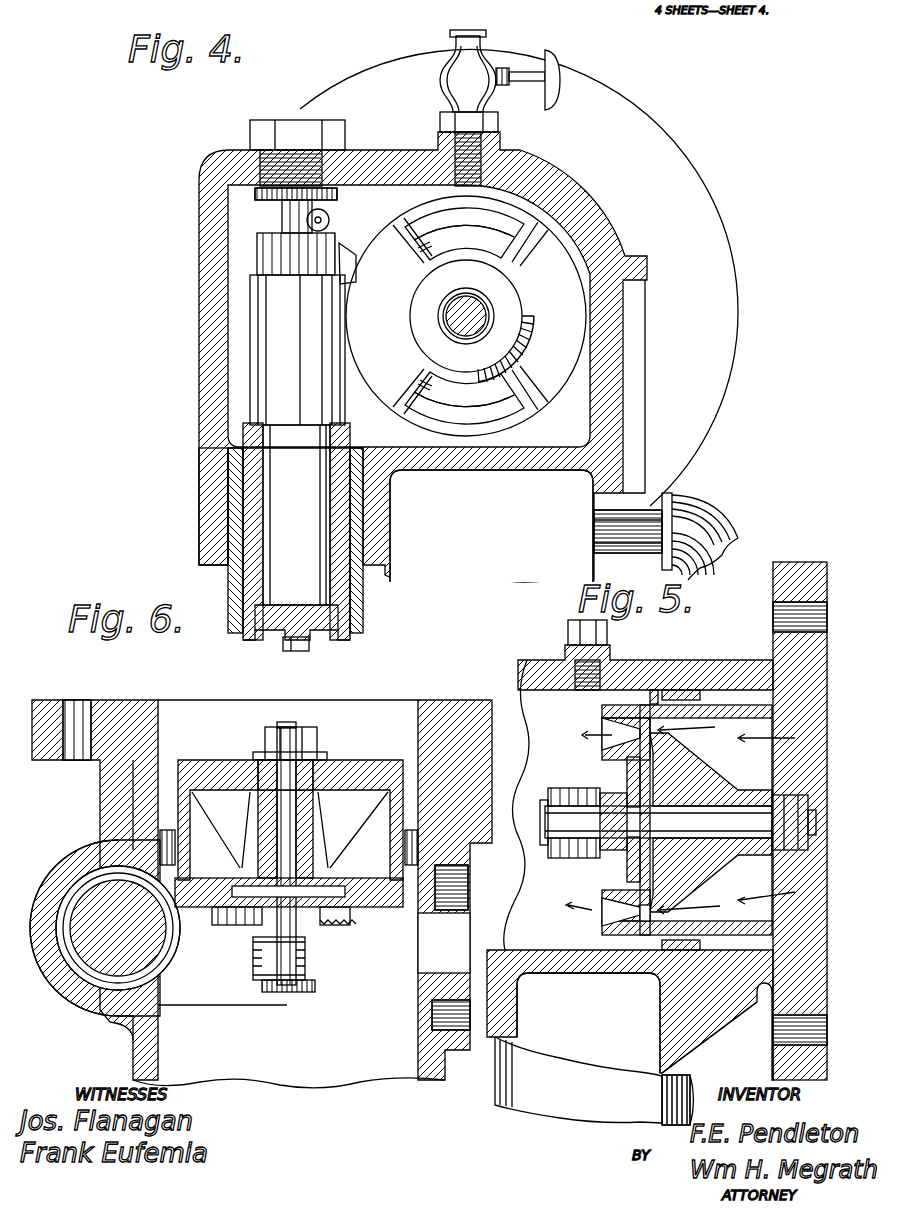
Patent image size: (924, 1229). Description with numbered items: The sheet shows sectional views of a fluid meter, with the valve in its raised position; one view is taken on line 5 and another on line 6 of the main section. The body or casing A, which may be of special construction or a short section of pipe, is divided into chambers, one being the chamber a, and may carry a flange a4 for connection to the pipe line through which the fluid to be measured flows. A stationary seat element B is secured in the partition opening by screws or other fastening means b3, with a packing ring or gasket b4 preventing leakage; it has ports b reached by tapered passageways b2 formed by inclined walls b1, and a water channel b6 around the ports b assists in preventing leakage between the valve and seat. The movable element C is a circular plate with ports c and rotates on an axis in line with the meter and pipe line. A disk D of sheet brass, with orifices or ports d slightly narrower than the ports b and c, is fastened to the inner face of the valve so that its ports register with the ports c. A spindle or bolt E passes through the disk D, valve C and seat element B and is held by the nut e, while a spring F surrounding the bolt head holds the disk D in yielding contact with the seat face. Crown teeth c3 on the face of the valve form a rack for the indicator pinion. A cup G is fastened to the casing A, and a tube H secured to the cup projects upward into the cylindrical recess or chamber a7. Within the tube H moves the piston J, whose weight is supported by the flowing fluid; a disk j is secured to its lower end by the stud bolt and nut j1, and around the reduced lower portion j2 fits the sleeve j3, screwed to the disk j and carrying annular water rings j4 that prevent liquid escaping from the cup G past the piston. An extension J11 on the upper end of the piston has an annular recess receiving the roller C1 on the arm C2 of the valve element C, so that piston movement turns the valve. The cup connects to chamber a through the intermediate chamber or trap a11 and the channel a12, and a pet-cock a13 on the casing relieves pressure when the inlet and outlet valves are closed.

In FIG. 4, the body or casing A is at (556, 195).
In FIG. 4, the chamber a is at (666, 536).
In FIG. 5, the chamber a is at (657, 843).
In FIG. 5, the flange a4 is at (775, 1052).
In FIG. 4, the cylindrical recess or chamber a7 is at (228, 548).
In FIG. 6, the cylindrical recess or chamber a7 is at (80, 880).
In FIG. 4, the intermediate chamber or trap a11 is at (491, 526).
In FIG. 5, the intermediate chamber or trap a11 is at (588, 1023).
In FIG. 5, the channel or passageway a12 is at (678, 1003).
In FIG. 4, the pet-cock a13 is at (445, 85).
In FIG. 5, the pet-cock a13 is at (608, 645).
In FIG. 5, the stationary seat element B is at (777, 748).
In FIG. 6, the stationary seat element B is at (375, 756).
In FIG. 5, the port b is at (600, 740).
In FIG. 5, the inclined wall b1 is at (702, 752).
In FIG. 5, the tapered passageway b2 is at (726, 826).
In FIG. 5, the screw or fastening means b3 is at (700, 698).
In FIG. 6, the packing ring or gasket b4 is at (430, 835).
In FIG. 5, the water channel b6 is at (656, 700).
In FIG. 4, the movable element C is at (466, 316).
In FIG. 5, the movable element C is at (625, 772).
In FIG. 6, the movable element C is at (378, 907).
In FIG. 4, the roller C1 is at (330, 217).
In FIG. 4, the extension or arm C2 is at (358, 258).
In FIG. 4, the port c is at (470, 236).
In FIG. 5, the port c is at (600, 920).
In FIG. 4, the crown teeth c3 is at (517, 349).
In FIG. 6, the crown teeth c3 is at (341, 938).
In FIG. 5, the disk D is at (652, 842).
In FIG. 6, the disk D is at (345, 884).
In FIG. 5, the orifice or port d is at (652, 912).
In FIG. 4, the spindle or bolt E is at (448, 316).
In FIG. 5, the spindle or bolt E is at (606, 850).
In FIG. 6, the spindle or bolt E is at (268, 913).
In FIG. 5, the nut e is at (790, 800).
In FIG. 6, the nut e is at (316, 735).
In FIG. 4, the spring F is at (442, 330).
In FIG. 5, the spring F is at (562, 848).
In FIG. 6, the spring F is at (255, 960).
In FIG. 5, the cup G is at (632, 1100).
In FIG. 4, the tube H is at (225, 481).
In FIG. 6, the tube H is at (148, 988).
In FIG. 4, the movable element or piston J is at (297, 306).
In FIG. 6, the movable element or piston J is at (155, 965).
In FIG. 4, the extension J11 is at (280, 200).
In FIG. 4, the disk j is at (272, 640).
In FIG. 4, the stud bolt and nut j1 is at (307, 645).
In FIG. 4, the lower portion of piston j2 is at (296, 531).
In FIG. 4, the sleeve or tube j3 is at (248, 517).
In FIG. 4, the annular water rings j4 is at (345, 528).
In FIG. 4, the section line 5 is at (467, 12).
In FIG. 4, the section line 6 is at (116, 296).